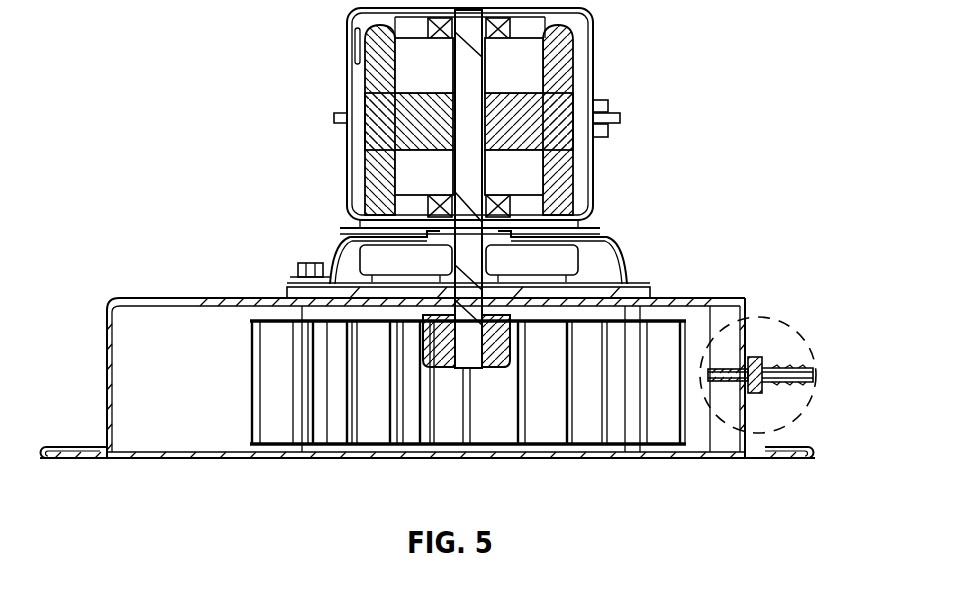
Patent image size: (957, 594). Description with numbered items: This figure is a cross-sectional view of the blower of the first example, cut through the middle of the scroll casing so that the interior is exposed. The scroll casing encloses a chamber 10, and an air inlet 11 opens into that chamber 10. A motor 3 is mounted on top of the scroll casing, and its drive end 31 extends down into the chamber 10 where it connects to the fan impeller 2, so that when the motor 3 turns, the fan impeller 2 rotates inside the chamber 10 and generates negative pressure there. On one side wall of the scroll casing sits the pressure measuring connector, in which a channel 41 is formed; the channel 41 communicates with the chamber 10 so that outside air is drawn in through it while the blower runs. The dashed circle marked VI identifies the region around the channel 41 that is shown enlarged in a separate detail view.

The fan impeller 2 is at (545, 397).
The motor 3 is at (360, 80).
The chamber 10 is at (227, 357).
The air inlet 11 is at (420, 452).
The drive end 31 is at (468, 320).
The channel 41 is at (780, 382).
The detail view VI is at (758, 317).